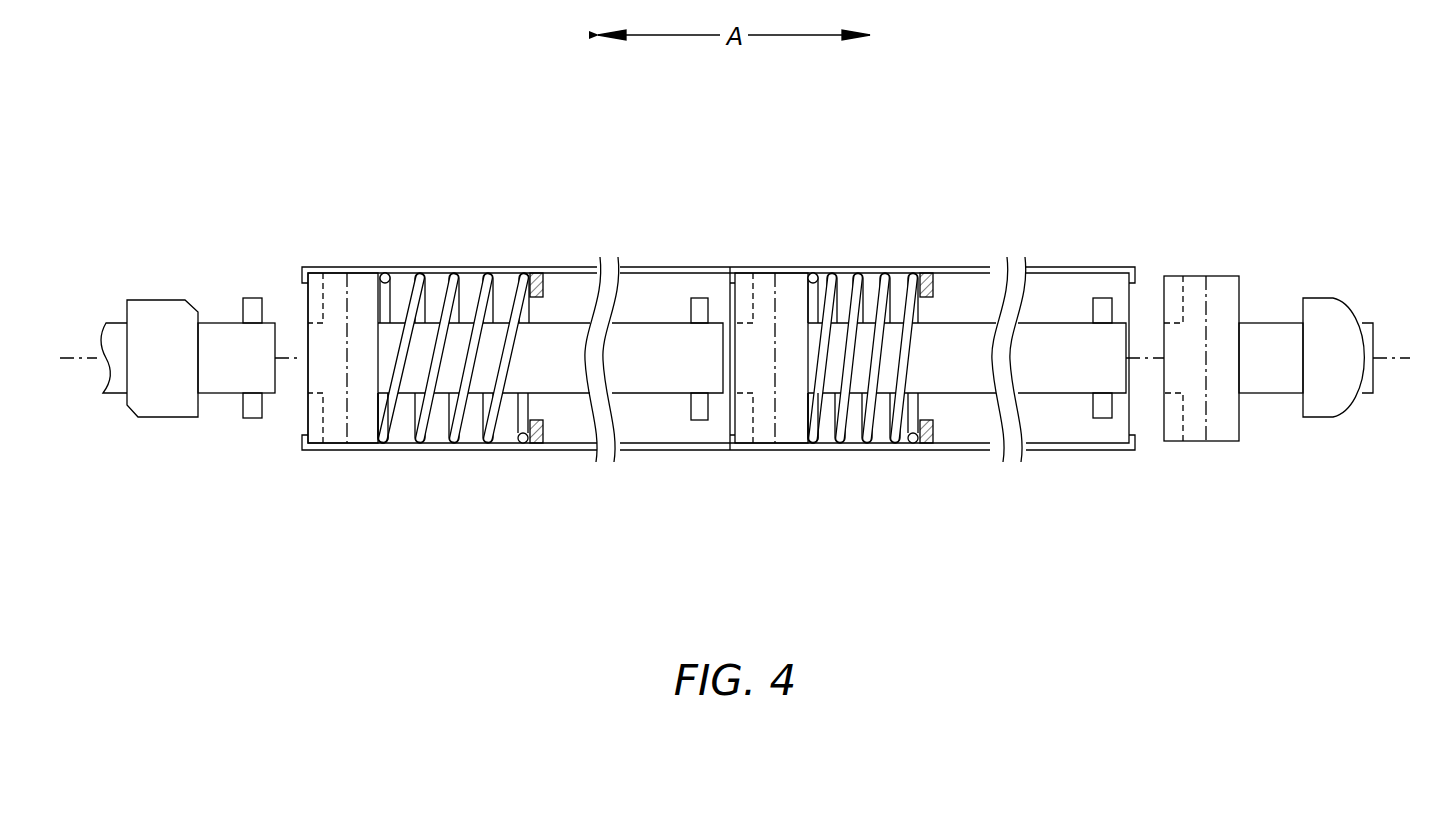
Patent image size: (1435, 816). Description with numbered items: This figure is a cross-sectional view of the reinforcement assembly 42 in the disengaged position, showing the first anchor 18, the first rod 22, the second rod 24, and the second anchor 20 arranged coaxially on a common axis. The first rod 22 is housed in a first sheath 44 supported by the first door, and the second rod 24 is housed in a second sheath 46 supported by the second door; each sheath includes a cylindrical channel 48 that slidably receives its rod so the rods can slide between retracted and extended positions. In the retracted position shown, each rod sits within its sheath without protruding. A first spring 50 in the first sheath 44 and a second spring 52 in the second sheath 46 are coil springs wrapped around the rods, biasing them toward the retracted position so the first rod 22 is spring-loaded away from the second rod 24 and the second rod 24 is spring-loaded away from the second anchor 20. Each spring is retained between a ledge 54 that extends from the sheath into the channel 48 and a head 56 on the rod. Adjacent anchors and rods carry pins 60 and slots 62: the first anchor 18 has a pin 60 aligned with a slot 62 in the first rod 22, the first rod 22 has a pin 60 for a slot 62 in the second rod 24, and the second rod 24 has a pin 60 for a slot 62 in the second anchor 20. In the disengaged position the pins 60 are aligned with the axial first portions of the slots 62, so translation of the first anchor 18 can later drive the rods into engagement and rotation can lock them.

The first anchor 18 is at (173, 418).
The second anchor 20 is at (1328, 418).
The first rod 22 is at (577, 323).
The second rod 24 is at (975, 323).
The reinforcement assembly 42 is at (373, 537).
The first sheath 44 is at (463, 270).
The second sheath 46 is at (893, 270).
The channel 48 is at (643, 290).
The first spring 50 is at (455, 445).
The second spring 52 is at (865, 445).
The ledge 54 is at (545, 432).
The head 56 is at (362, 273).
The pin 60 is at (251, 298).
The slot 62 is at (315, 445).